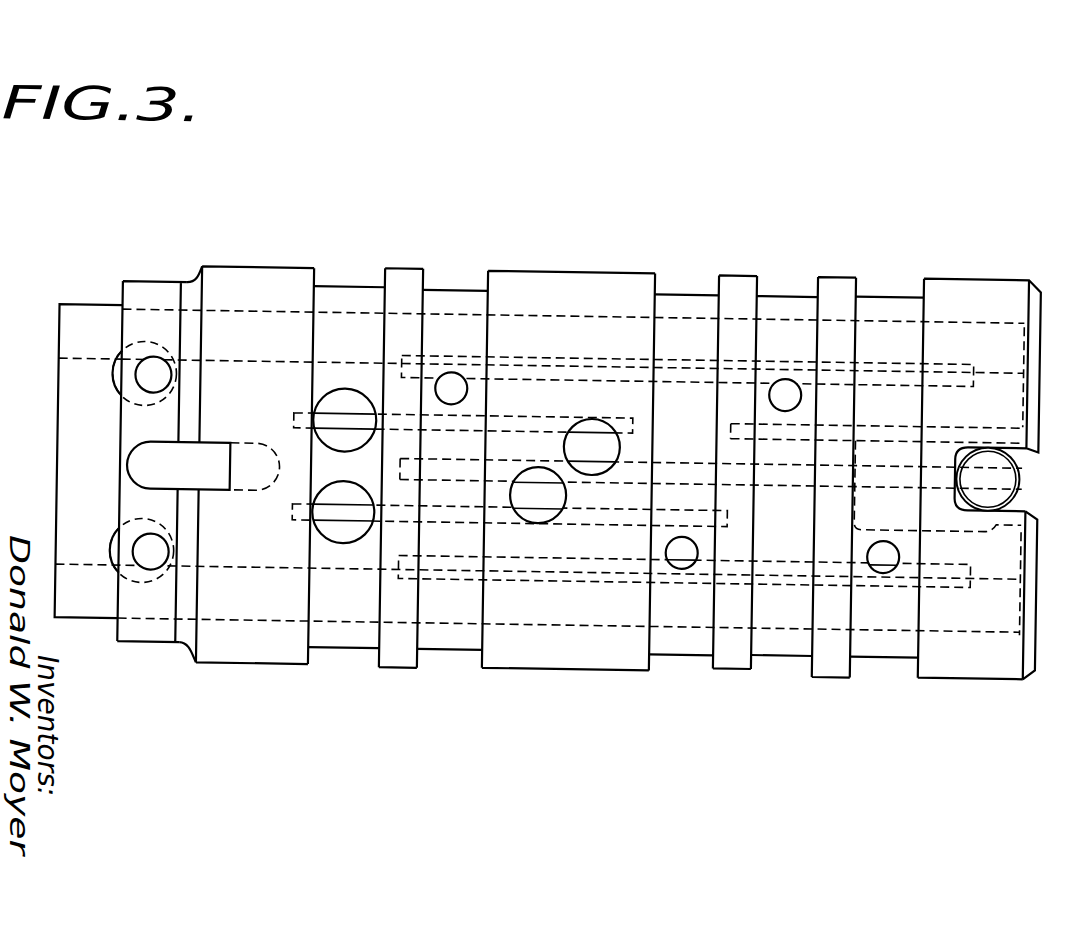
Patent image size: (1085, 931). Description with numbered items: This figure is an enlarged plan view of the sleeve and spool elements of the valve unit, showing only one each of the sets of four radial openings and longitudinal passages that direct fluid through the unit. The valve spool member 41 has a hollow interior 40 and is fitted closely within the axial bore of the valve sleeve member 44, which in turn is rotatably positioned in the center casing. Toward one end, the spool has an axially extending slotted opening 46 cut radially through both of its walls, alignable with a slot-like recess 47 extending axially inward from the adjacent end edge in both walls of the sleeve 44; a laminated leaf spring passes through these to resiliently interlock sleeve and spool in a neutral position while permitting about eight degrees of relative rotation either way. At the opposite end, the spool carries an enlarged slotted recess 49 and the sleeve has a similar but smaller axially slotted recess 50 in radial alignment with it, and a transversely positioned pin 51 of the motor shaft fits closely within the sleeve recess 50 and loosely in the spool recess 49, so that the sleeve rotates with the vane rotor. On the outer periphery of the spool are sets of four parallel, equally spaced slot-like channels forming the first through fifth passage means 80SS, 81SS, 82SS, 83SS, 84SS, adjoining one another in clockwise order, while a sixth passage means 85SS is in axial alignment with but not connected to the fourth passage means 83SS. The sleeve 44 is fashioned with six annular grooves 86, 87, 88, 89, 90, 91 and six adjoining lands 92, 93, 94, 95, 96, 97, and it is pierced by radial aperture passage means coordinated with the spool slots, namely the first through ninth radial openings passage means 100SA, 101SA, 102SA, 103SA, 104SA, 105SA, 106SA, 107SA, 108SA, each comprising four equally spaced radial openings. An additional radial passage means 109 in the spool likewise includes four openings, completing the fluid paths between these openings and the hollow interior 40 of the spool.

The hollow interior 40 is at (88, 366).
The valve spool member 41 is at (70, 313).
The valve sleeve member 44 is at (120, 290).
The slotted opening 46 is at (133, 480).
The slot-like recess 47 is at (122, 449).
The enlarged slotted recess 49 is at (991, 518).
The axially slotted recess 50 is at (1016, 496).
The transversely positioned pin 51 is at (1000, 463).
The first passage means 80SS is at (462, 582).
The second passage means 81SS is at (294, 526).
The third passage means 82SS is at (398, 472).
The fourth passage means 83SS is at (289, 422).
The fifth passage means 84SS is at (396, 364).
The sixth passage means 85SS is at (726, 425).
The annular groove 86 is at (168, 649).
The annular groove 87 is at (353, 652).
The annular groove 88 is at (463, 652).
The annular groove 89 is at (693, 654).
The annular groove 90 is at (798, 653).
The annular groove 91 is at (893, 653).
The land 92 is at (273, 668).
The land 93 is at (400, 671).
The land 94 is at (588, 670).
The land 95 is at (736, 667).
The land 96 is at (833, 674).
The land 97 is at (963, 673).
The first radial openings passage means 100SA is at (344, 548).
The second radial openings passage means 101SA is at (366, 378).
The third radial passage means 102SA is at (467, 394).
The fourth radial passage means 103SA is at (569, 499).
The fifth radial passage means 104SA is at (565, 446).
The sixth fluid passage means 105SA is at (664, 548).
The seventh radial passage means 106SA is at (802, 398).
The eighth radial passage means 107SA is at (868, 542).
The ninth radial passage means 108SA is at (145, 398).
The additional radial passage means 109 is at (113, 362).